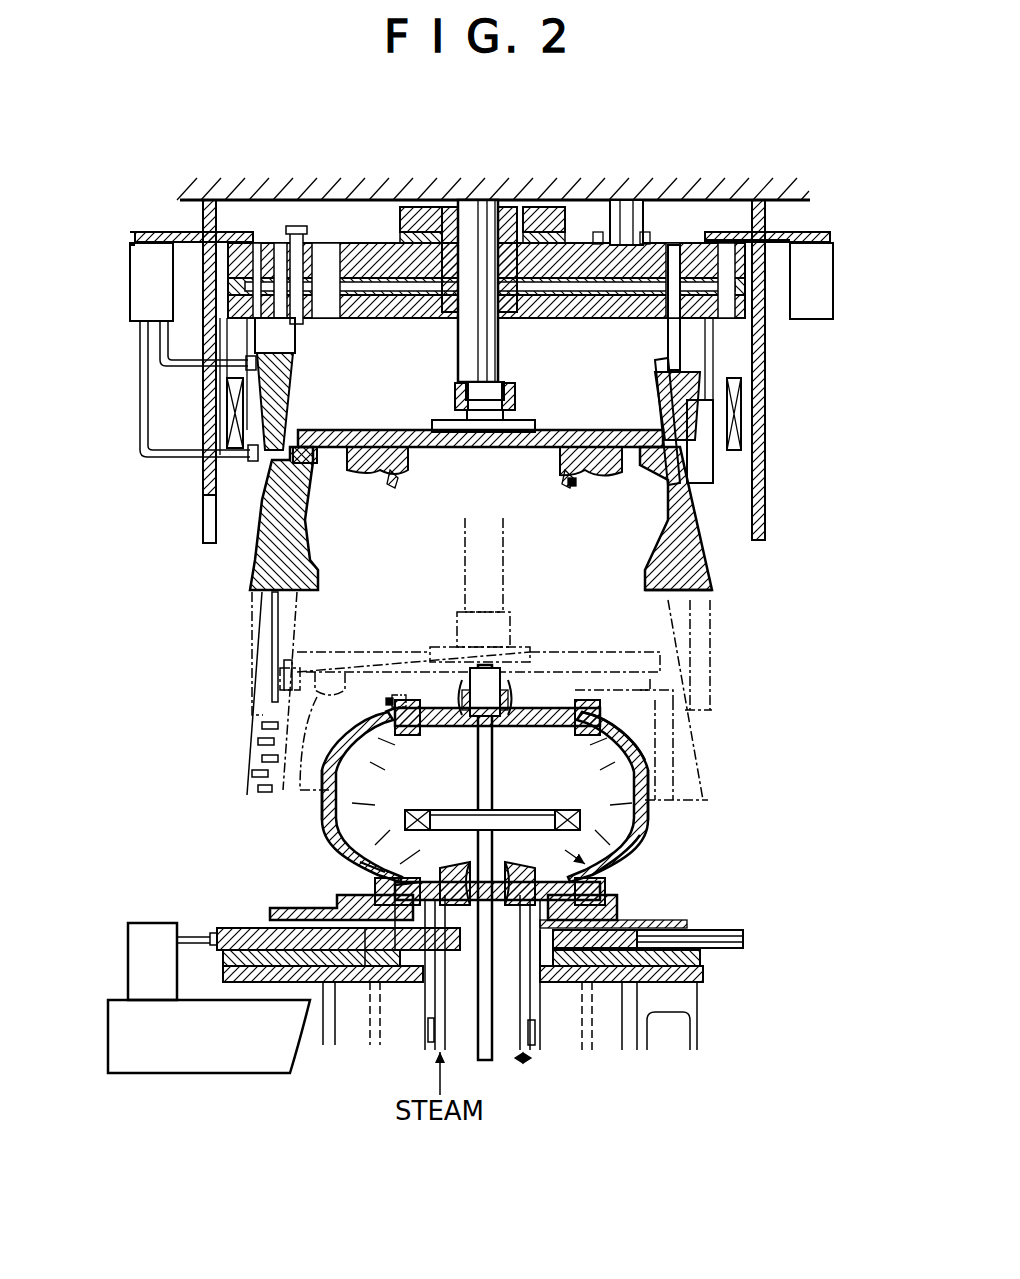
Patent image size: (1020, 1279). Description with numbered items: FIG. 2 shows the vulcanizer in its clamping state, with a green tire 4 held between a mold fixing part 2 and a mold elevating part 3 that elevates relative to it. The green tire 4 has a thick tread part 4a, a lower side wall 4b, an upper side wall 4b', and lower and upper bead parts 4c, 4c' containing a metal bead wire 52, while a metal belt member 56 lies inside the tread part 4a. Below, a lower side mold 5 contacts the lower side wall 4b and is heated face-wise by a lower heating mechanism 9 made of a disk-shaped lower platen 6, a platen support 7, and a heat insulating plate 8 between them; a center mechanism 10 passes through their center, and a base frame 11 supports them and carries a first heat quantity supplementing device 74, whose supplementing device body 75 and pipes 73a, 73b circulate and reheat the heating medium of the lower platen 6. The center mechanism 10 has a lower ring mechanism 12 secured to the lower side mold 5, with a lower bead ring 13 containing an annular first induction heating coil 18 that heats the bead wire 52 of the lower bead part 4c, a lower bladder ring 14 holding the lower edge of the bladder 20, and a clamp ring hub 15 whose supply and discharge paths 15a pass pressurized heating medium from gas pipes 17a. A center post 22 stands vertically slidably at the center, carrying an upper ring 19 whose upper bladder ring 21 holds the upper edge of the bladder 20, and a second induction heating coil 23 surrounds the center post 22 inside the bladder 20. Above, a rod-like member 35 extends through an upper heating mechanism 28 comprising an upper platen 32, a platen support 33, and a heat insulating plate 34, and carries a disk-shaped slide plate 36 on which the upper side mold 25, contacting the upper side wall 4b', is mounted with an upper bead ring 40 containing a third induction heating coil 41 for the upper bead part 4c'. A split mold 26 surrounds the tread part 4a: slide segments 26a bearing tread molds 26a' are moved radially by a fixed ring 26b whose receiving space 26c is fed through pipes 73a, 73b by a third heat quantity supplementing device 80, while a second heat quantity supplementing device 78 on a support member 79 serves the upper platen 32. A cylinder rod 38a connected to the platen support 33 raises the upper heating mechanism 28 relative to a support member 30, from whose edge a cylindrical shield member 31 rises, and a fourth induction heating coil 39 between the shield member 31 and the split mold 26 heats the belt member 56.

The mold fixing part 2 is at (740, 882).
The mold elevating part 3 is at (790, 214).
The green tire 4 is at (652, 826).
The tread part 4a is at (649, 782).
The lower side wall 4b is at (635, 856).
The upper side wall 4b' is at (673, 740).
The lower bead part 4c is at (519, 883).
The upper bead part 4c' is at (522, 717).
The lower side mold 5 is at (612, 900).
The lower platen 6 is at (745, 940).
The platen support 7 is at (701, 957).
The heat insulating plate 8 is at (705, 975).
The lower heating mechanism 9 is at (808, 925).
The center mechanism 10 is at (535, 1062).
The base frame 11 is at (190, 1060).
The lower ring mechanism 12 is at (368, 960).
The lower bead ring 13 is at (392, 950).
The lower bladder ring 14 is at (362, 864).
The clamp ring hub 15 is at (445, 835).
The supply- and discharge paths 15a is at (492, 801).
The gas pipes 17a is at (428, 1035).
The first induction heating coil 18 is at (378, 892).
The upper ring 19 is at (522, 700).
The bladder 20 is at (326, 832).
The upper bladder ring 21 is at (545, 700).
The center post 22 is at (494, 752).
The second induction heating coil 23 is at (460, 810).
The upper side mold 25 is at (600, 478).
The split mold 26 is at (850, 435).
The slide segment 26a is at (545, 581).
The tread mold 26a' is at (729, 572).
The fixed ring 26b is at (690, 452).
The receiving space 26c is at (290, 412).
The upper heating mechanism 28 is at (78, 258).
The support member 30 is at (380, 196).
The shield member 31 is at (766, 532).
The upper platen 32 is at (228, 308).
The platen support 33 is at (228, 262).
The heat insulating plate 34 is at (228, 287).
The rod-like member 35 is at (490, 215).
The slide plate 36 is at (588, 428).
The cylinder rod 38a is at (625, 215).
The fourth induction heating coil 39 is at (742, 406).
The upper bead ring 40 is at (560, 478).
The third induction heating coil 41 is at (568, 484).
The bead wire 52 is at (386, 714).
The belt member 56 is at (332, 797).
The pipe 73a is at (168, 372).
The pipe 73b is at (148, 400).
The first heat quantity supplementing device 74 is at (128, 920).
The supplementing device body 75 is at (165, 250).
The second heat quantity supplementing device 78 is at (848, 245).
The support member 79 is at (800, 232).
The third heat quantity supplementing device 80 is at (127, 240).